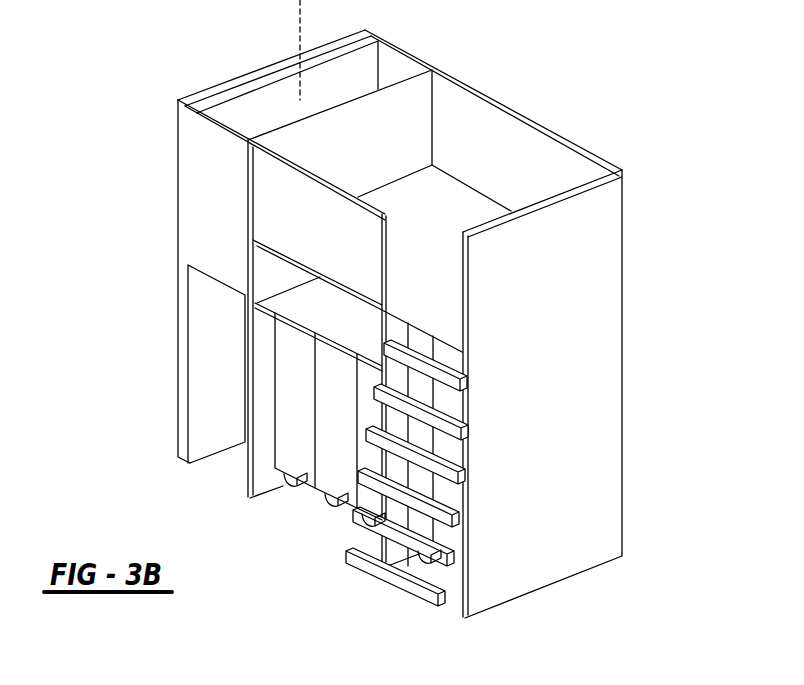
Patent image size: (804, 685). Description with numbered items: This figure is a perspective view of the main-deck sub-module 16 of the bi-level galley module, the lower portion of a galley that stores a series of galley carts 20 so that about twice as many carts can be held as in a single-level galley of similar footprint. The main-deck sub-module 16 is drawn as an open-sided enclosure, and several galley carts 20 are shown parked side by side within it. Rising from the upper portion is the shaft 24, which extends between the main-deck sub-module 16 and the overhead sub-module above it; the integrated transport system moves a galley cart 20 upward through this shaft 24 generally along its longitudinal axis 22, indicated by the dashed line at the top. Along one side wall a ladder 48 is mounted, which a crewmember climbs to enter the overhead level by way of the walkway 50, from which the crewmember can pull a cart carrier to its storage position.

The main-deck sub-module 16 is at (178, 101).
The galley cart 20 is at (303, 400).
The longitudinal axis 22 is at (300, 25).
The shaft 24 is at (263, 123).
The ladder 48 is at (358, 566).
The walkway 50 is at (423, 213).